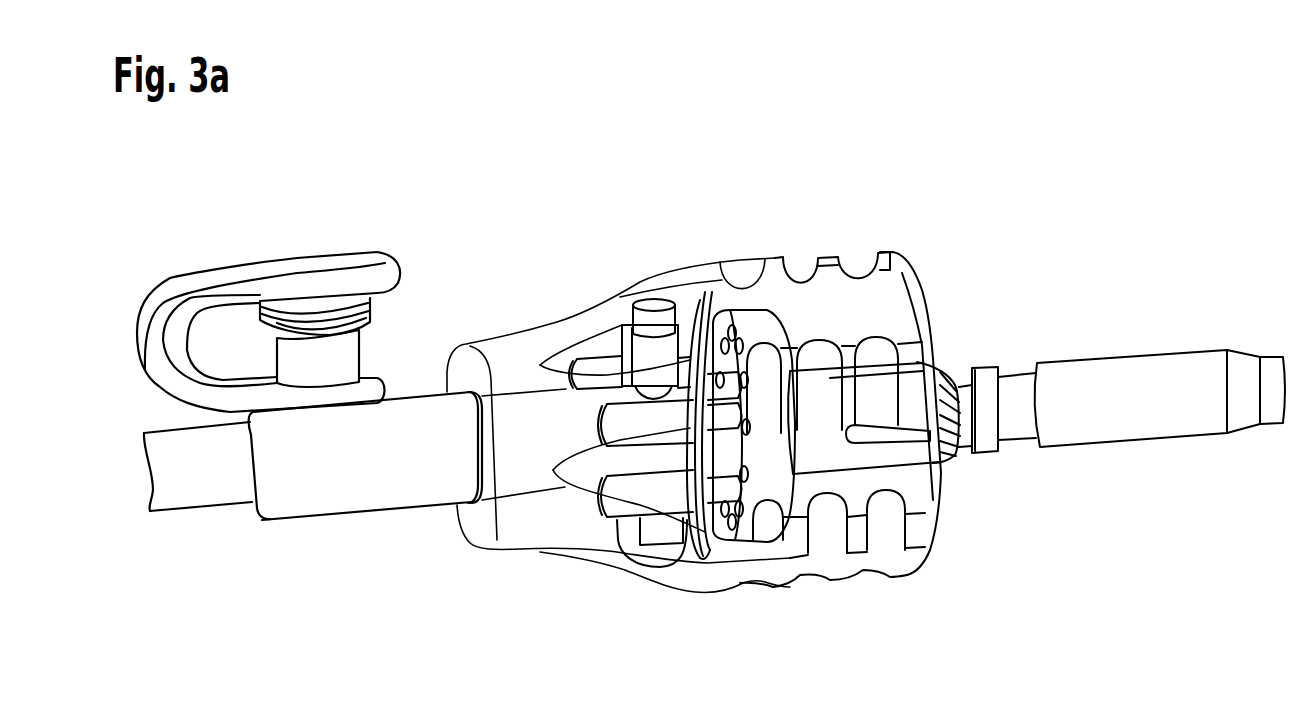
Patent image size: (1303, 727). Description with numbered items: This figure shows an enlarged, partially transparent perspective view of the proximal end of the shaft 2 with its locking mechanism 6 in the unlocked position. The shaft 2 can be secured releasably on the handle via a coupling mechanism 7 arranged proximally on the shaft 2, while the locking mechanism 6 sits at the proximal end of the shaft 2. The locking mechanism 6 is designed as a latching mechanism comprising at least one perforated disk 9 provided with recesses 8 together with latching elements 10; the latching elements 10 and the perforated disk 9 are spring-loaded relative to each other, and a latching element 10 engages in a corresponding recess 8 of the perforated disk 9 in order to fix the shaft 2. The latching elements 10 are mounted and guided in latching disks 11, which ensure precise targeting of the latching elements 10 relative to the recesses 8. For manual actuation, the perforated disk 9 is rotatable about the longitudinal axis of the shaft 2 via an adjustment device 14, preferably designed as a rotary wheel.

The shaft 2 is at (178, 511).
The locking mechanism 6 is at (858, 186).
The coupling mechanism 7 is at (1147, 346).
The recesses 8 is at (710, 322).
The perforated disk 9 is at (742, 322).
The latching elements 10 is at (707, 543).
The latching disks 11 is at (697, 322).
The adjustment device 14 is at (533, 548).